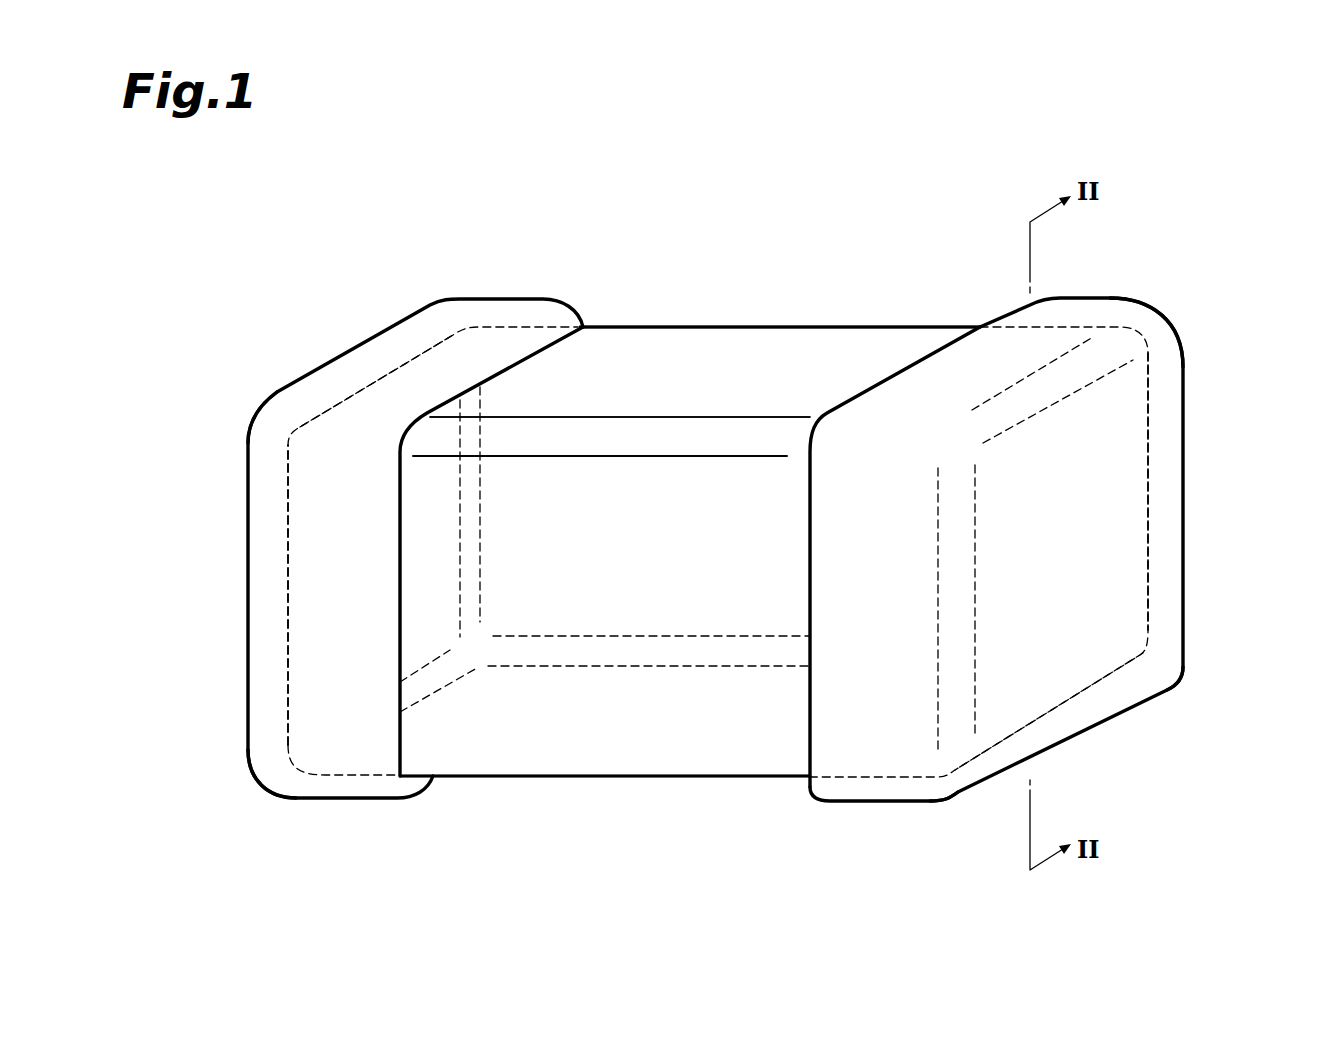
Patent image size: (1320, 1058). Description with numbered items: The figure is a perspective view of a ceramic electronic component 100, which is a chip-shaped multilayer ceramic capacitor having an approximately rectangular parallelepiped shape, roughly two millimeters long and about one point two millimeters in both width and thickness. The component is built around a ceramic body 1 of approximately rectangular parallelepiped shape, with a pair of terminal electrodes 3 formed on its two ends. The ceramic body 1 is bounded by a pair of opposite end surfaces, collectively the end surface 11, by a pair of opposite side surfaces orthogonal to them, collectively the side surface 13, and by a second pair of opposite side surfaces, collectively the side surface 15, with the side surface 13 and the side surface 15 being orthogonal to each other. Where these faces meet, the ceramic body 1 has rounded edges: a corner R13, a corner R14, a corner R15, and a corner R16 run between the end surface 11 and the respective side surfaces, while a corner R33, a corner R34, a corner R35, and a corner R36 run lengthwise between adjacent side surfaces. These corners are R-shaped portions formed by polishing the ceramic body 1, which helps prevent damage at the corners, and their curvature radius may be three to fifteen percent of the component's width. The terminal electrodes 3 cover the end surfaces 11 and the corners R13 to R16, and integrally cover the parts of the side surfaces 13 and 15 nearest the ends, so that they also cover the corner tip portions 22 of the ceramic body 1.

The ceramic electronic component 100 is at (990, 190).
The ceramic body 1 is at (864, 328).
The terminal electrodes 3 is at (469, 301).
The side surface 13 is at (655, 360).
The side surface 15 is at (818, 375).
The end surface 11 is at (325, 578).
The corner tip portions 22 is at (288, 436).
The corner R13 is at (380, 370).
The corner R14 is at (432, 687).
The corner R15 is at (287, 641).
The corner R16 is at (472, 500).
The corner R33 is at (588, 438).
The corner R34 is at (595, 778).
The corner R35 is at (642, 645).
The corner R36 is at (718, 327).